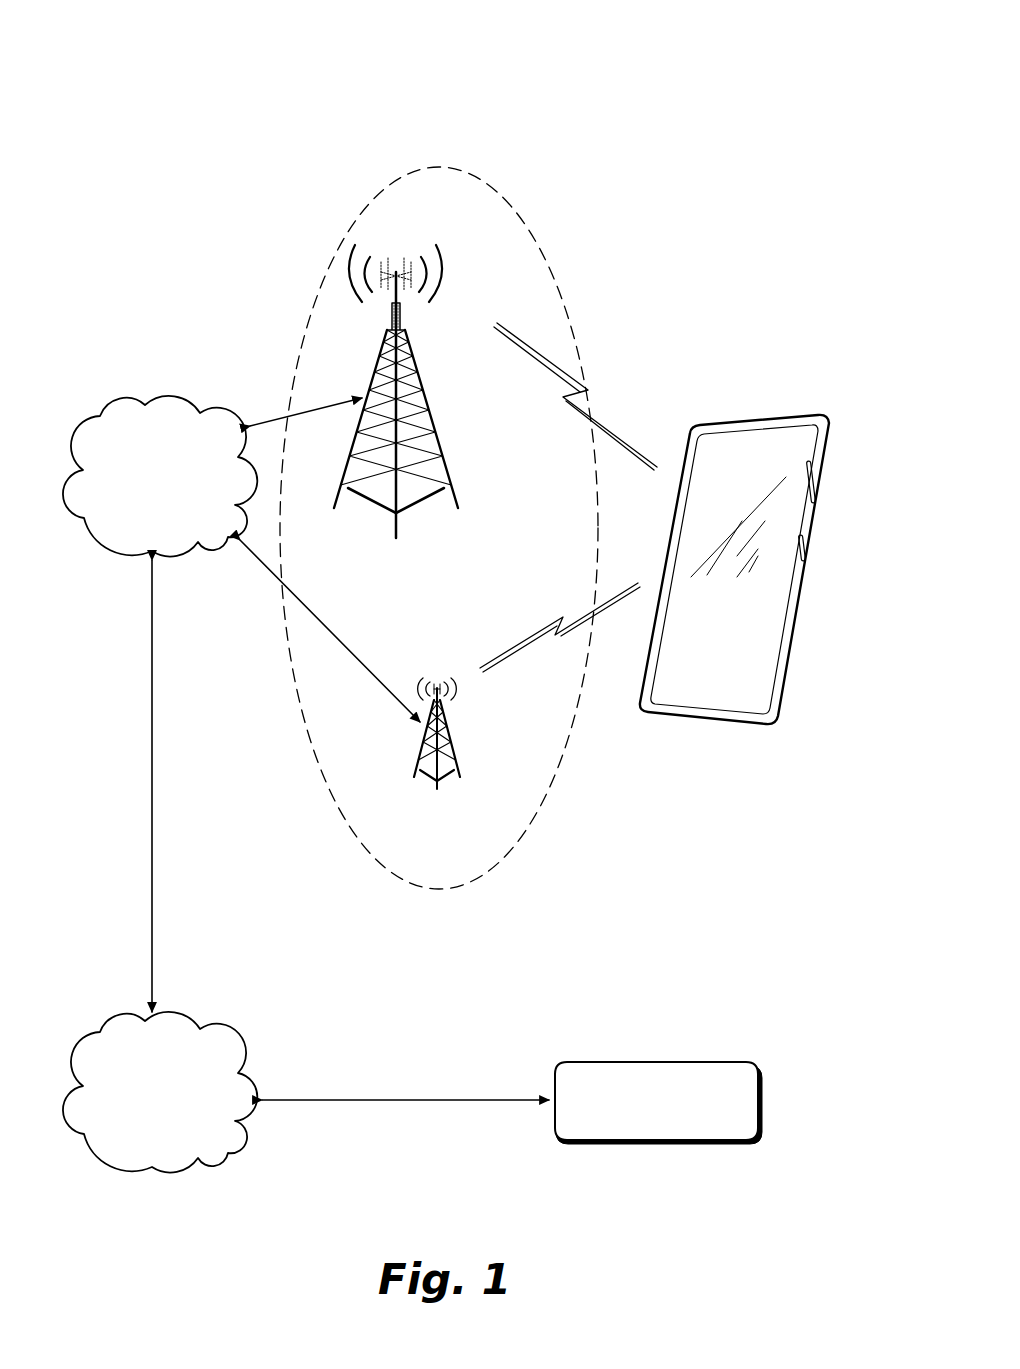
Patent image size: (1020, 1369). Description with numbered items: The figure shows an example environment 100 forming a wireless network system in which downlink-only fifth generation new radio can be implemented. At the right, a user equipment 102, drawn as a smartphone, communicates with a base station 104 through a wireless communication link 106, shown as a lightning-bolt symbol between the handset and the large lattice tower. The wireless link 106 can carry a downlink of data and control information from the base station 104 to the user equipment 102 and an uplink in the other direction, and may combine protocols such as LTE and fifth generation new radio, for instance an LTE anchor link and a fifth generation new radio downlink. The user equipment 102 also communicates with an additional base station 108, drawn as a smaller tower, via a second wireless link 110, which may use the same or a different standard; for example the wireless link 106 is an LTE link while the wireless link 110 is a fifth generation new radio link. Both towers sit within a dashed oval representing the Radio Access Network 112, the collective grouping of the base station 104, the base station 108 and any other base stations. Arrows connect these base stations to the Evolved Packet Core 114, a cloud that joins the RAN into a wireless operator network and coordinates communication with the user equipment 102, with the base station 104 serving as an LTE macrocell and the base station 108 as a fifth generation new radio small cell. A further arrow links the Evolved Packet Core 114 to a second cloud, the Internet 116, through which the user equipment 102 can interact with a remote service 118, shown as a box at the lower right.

The environment 100 is at (163, 70).
The user equipment 102 is at (724, 726).
The base station 104 is at (425, 518).
The wireless communication link 106 is at (566, 410).
The additional base station 108 is at (452, 789).
The wireless link 110 is at (515, 636).
The Radio Access Network 112 is at (530, 205).
The Evolved Packet Core 114 is at (160, 476).
The Internet 116 is at (160, 1092).
The remote service 118 is at (658, 1103).